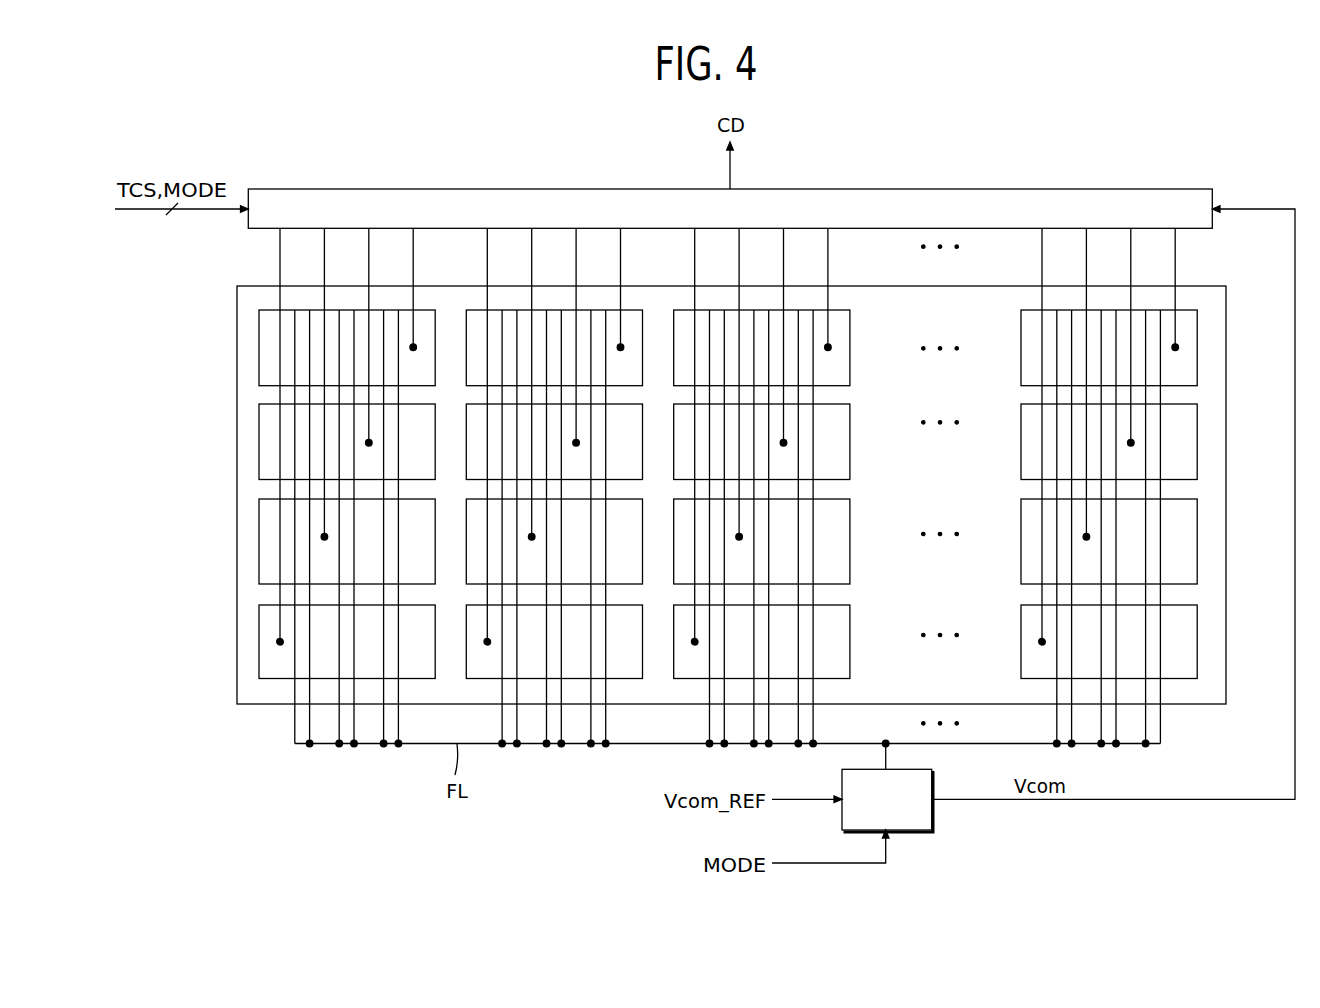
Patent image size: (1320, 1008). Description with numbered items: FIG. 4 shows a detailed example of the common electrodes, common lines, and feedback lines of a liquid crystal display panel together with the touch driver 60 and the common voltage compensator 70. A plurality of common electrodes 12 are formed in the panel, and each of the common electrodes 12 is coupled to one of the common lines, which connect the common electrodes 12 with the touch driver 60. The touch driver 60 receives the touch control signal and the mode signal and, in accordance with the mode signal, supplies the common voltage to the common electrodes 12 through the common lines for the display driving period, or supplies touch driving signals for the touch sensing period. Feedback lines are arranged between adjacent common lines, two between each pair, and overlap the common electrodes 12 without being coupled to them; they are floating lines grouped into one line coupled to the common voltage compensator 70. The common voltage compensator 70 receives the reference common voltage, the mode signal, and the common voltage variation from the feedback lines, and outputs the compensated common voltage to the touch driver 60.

The common electrodes 12 is at (258, 438).
The touch driver 60 is at (1080, 188).
The common voltage compensator 70 is at (935, 823).